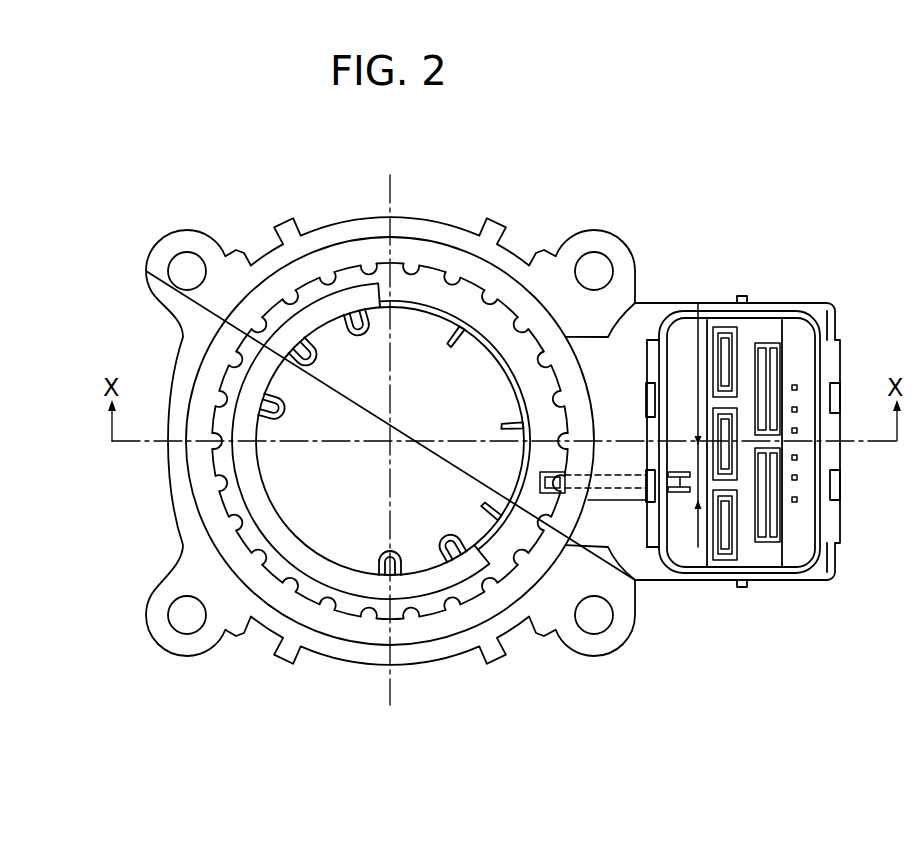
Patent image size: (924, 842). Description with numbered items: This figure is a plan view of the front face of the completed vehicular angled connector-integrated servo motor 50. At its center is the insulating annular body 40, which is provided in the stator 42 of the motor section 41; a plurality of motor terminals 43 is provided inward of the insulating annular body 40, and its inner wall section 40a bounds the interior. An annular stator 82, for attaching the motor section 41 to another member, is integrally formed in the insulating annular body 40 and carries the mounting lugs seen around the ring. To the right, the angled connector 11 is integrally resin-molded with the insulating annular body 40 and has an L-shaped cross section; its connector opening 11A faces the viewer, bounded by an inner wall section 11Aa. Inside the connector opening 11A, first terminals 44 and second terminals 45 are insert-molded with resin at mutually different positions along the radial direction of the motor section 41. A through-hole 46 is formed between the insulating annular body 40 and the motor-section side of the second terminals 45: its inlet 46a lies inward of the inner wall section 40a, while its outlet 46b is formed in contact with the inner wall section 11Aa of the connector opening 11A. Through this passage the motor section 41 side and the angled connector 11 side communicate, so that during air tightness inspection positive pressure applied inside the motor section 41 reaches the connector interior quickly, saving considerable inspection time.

The vehicular angled connector-integrated servo motor 50 is at (337, 190).
The insulating annular body 40 is at (488, 281).
The inner wall section 40a is at (510, 320).
The motor section 41 is at (168, 505).
The stator 42 is at (207, 393).
The motor terminals 43 is at (368, 326).
The annular stator 82 is at (219, 633).
The angled connector 11 is at (795, 303).
The connector opening 11A is at (676, 537).
The inner wall section 11Aa is at (675, 528).
The first terminals 44 is at (794, 386).
The second terminals 45 is at (731, 355).
The through-hole 46 is at (613, 475).
The inlet 46a is at (553, 494).
The outlet 46b is at (676, 494).